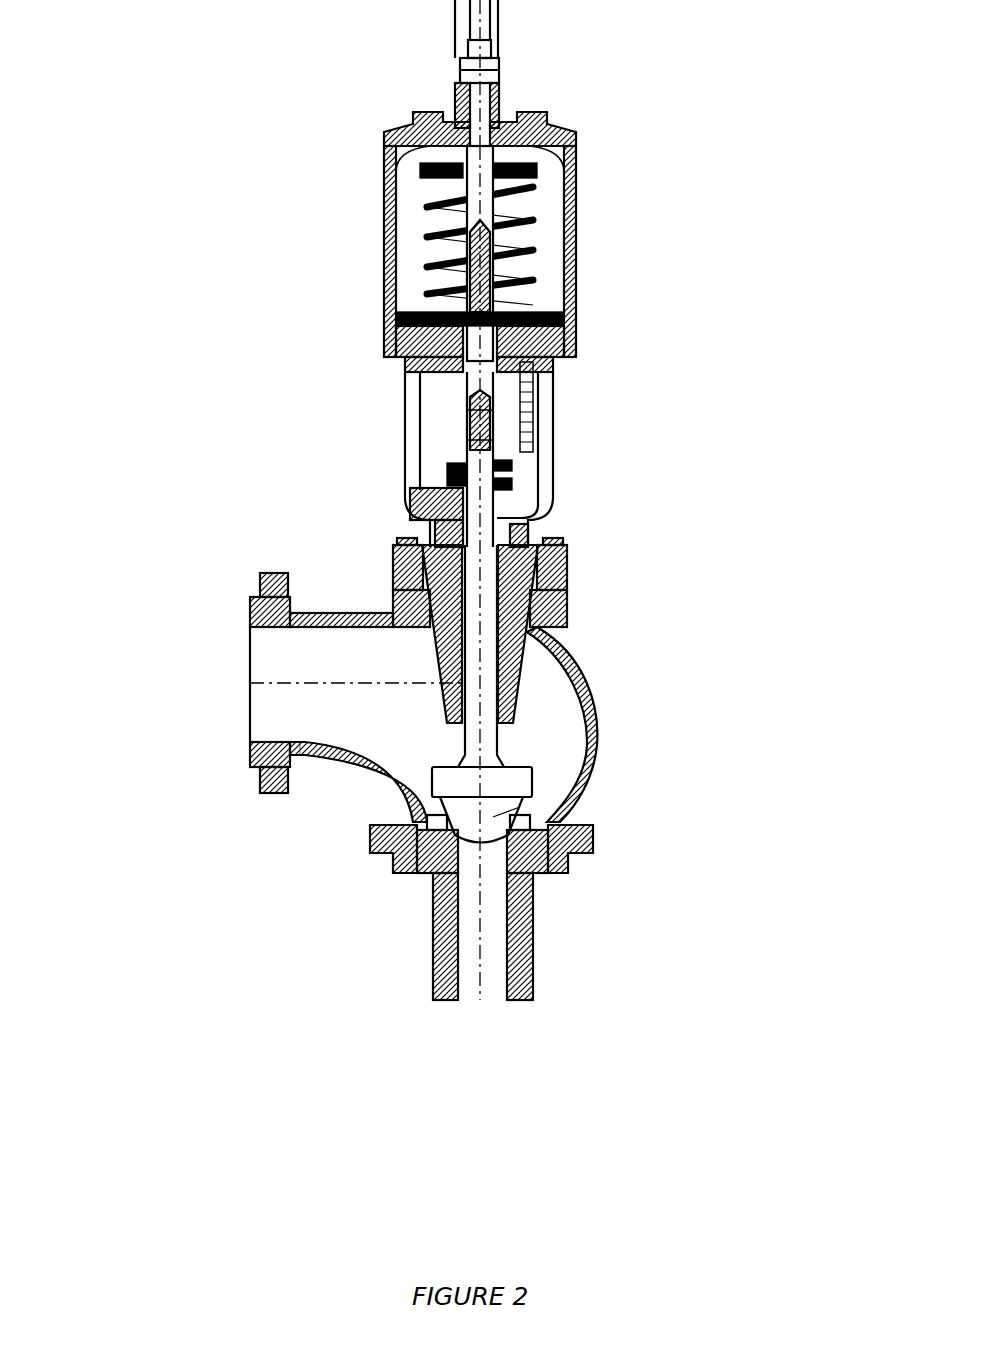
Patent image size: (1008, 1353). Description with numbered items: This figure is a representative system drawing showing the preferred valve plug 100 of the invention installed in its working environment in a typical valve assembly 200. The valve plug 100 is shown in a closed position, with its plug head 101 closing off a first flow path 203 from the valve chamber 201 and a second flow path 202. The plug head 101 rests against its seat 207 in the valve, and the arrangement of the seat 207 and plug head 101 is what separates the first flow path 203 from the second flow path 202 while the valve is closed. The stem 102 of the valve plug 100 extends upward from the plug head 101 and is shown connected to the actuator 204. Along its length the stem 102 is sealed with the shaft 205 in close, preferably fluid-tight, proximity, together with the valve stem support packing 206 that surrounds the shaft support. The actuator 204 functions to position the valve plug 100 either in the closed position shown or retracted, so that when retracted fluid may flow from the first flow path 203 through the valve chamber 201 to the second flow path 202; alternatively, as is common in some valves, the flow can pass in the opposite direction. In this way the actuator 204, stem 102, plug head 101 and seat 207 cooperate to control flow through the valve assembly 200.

The valve assembly 200 is at (638, 565).
The valve chamber 201 is at (560, 707).
The second flow path 202 is at (497, 980).
The first flow path 203 is at (290, 660).
The actuator 204 is at (555, 413).
The shaft 205 is at (558, 627).
The valve stem support packing 206 is at (542, 675).
The seat 207 is at (570, 868).
The valve plug 100 is at (513, 763).
The plug head 101 is at (590, 795).
The stem 102 is at (470, 740).